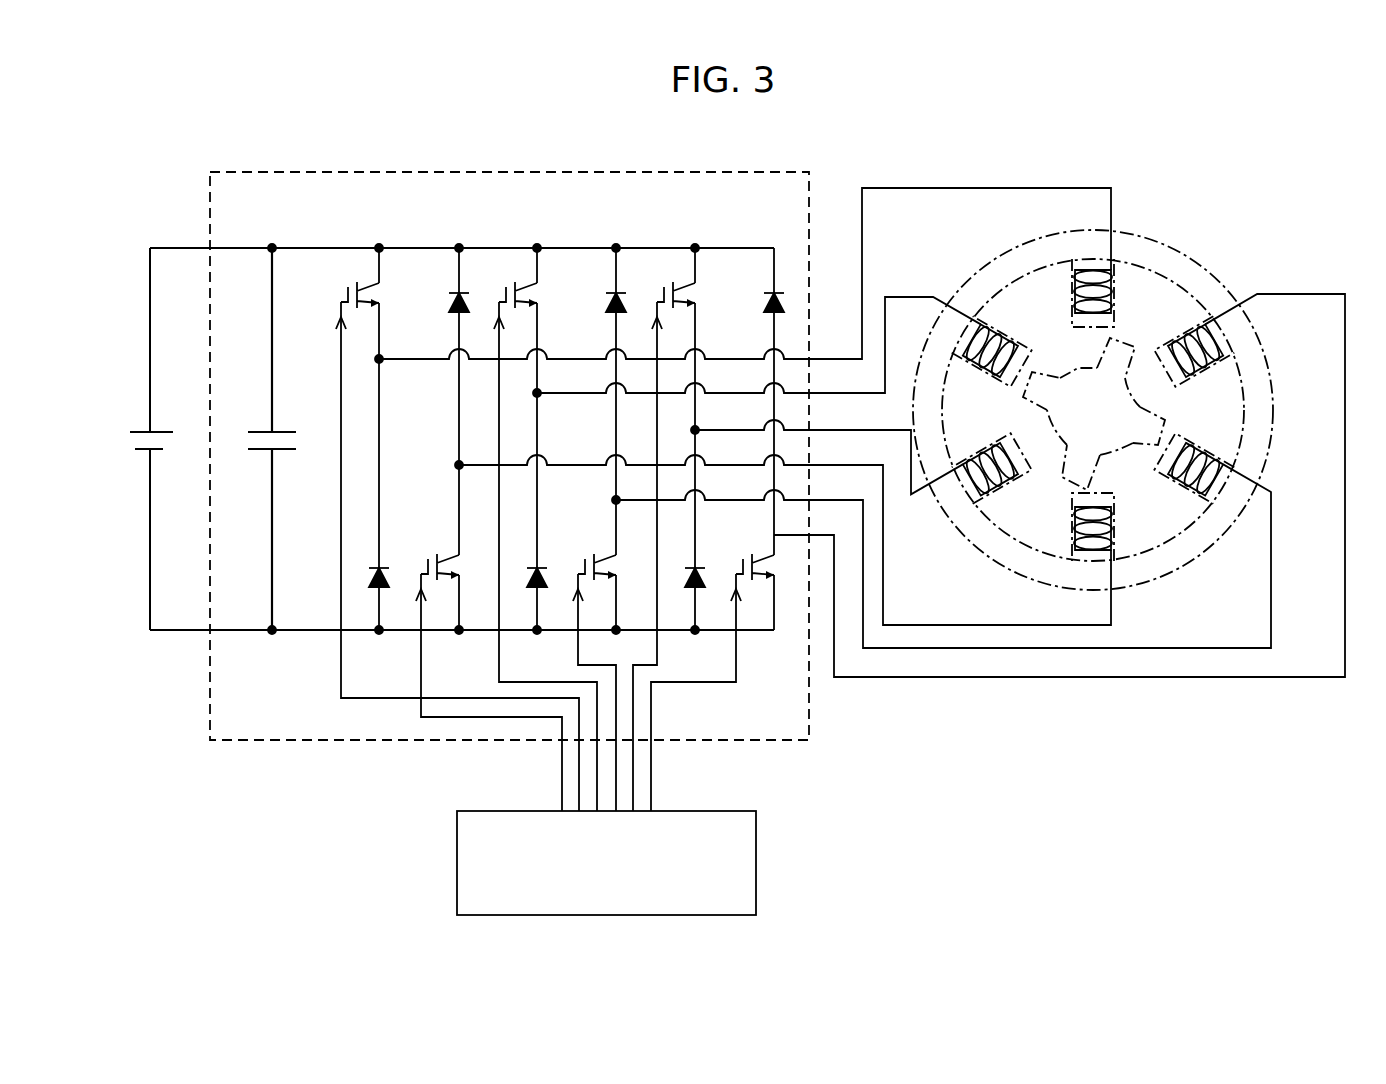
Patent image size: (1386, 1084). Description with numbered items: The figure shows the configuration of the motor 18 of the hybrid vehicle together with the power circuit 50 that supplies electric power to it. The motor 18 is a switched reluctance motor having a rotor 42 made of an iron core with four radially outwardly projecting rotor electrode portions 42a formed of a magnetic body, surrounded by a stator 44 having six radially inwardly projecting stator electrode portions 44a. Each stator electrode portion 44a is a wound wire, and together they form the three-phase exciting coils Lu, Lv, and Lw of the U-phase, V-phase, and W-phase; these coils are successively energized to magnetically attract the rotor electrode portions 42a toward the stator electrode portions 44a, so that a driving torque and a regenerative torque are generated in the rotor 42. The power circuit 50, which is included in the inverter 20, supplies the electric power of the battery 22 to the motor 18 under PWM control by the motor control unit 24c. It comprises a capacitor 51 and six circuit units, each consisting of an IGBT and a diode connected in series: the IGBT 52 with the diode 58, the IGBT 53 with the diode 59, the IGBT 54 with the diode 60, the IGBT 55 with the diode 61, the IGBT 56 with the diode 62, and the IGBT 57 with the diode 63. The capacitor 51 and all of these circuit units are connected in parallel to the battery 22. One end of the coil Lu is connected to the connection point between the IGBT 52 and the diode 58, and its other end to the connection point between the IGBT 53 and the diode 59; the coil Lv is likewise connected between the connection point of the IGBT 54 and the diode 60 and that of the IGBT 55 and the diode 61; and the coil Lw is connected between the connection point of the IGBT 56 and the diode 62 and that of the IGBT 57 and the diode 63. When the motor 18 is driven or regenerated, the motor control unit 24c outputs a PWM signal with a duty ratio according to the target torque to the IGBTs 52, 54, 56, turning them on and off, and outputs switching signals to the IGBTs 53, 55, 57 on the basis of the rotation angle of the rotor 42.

The motor 18 is at (1116, 369).
The inverter 20 is at (704, 170).
The battery 22 is at (143, 453).
The motor control unit 24c is at (764, 832).
The rotor 42 is at (1128, 333).
The rotor electrode portion 42a is at (1052, 376).
The stator 44 is at (1139, 232).
The stator electrode portion 44a is at (1033, 276).
The power circuit 50 is at (401, 240).
The capacitor 51 is at (284, 415).
The IGBT 52 is at (363, 268).
The IGBT 53 is at (438, 546).
The IGBT 54 is at (521, 266).
The IGBT 55 is at (591, 546).
The IGBT 56 is at (680, 266).
The IGBT 57 is at (754, 588).
The diode 58 is at (374, 557).
The diode 59 is at (452, 277).
The diode 60 is at (531, 557).
The diode 61 is at (608, 277).
The diode 62 is at (689, 603).
The diode 63 is at (765, 277).
The U-phase exciting coil Lu is at (1093, 270).
The V-phase exciting coil Lv is at (975, 343).
The W-phase exciting coil Lw is at (1215, 336).